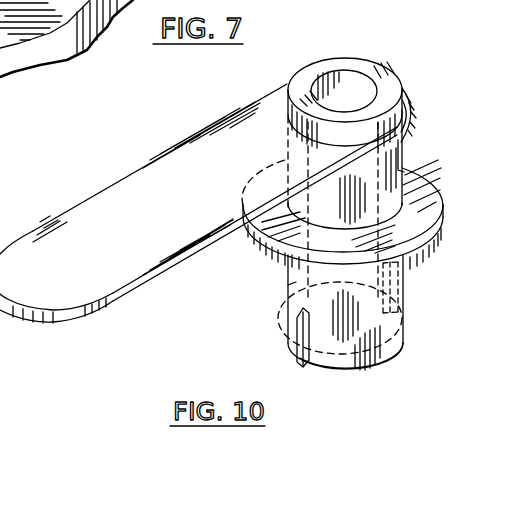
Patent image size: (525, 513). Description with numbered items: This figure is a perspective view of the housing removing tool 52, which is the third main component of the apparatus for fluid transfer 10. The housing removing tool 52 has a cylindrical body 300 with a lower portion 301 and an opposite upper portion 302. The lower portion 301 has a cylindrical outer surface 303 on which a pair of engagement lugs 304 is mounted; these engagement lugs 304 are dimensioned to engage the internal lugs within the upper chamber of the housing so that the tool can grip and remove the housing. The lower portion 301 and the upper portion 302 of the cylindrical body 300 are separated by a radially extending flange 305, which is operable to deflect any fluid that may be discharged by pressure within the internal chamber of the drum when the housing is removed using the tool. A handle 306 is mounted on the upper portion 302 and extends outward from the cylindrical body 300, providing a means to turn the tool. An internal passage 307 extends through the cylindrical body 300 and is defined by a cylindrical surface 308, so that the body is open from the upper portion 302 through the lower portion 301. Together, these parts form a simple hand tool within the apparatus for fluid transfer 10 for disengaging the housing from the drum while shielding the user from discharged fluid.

The apparatus for fluid transfer 10 is at (390, 53).
The housing removing tool 52 is at (233, 258).
The cylindrical body 300 is at (403, 160).
The lower portion 301 is at (403, 315).
The upper portion 302 is at (407, 172).
The cylindrical outer surface 303 is at (405, 357).
The engagement lugs 304 is at (300, 338).
The radially extending flange 305 is at (442, 203).
The handle 306 is at (126, 245).
The internal passage 307 is at (287, 283).
The cylindrical surface 308 is at (323, 67).